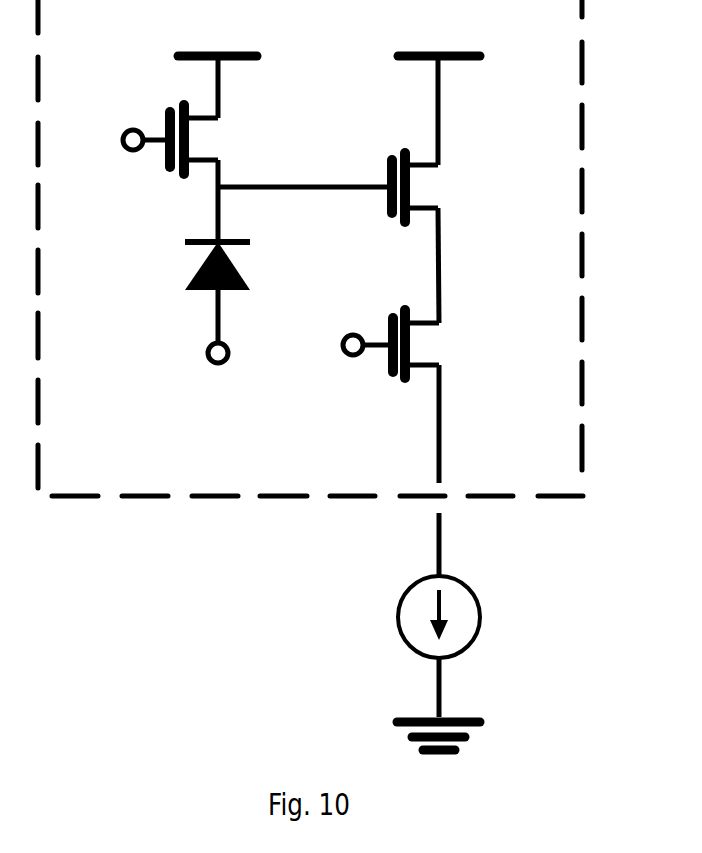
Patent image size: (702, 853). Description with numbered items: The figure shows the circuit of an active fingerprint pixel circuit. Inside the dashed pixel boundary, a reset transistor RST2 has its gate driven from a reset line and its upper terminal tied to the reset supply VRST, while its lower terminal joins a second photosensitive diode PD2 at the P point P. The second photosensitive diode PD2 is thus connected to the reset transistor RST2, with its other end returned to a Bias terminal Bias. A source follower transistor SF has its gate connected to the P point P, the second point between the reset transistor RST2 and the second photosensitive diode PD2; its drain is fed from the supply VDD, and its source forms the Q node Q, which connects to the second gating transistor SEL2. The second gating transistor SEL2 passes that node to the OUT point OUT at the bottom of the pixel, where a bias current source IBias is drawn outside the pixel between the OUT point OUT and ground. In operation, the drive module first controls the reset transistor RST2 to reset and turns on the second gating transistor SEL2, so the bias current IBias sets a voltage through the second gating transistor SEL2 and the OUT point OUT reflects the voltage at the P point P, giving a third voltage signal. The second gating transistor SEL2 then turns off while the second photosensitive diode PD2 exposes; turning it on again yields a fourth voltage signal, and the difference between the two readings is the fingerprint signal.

The reset voltage supply VRST is at (218, 64).
The reset transistor RST2 is at (135, 139).
The P point P is at (305, 201).
The second photosensitive diode PD2 is at (175, 292).
The bias terminal Bias is at (233, 376).
The supply voltage VDD is at (439, 87).
The source follower transistor SF is at (404, 168).
The source follower output node Q is at (418, 265).
The second gating transistor SEL2 is at (369, 337).
The OUT point OUT is at (490, 424).
The element IBias is at (399, 631).